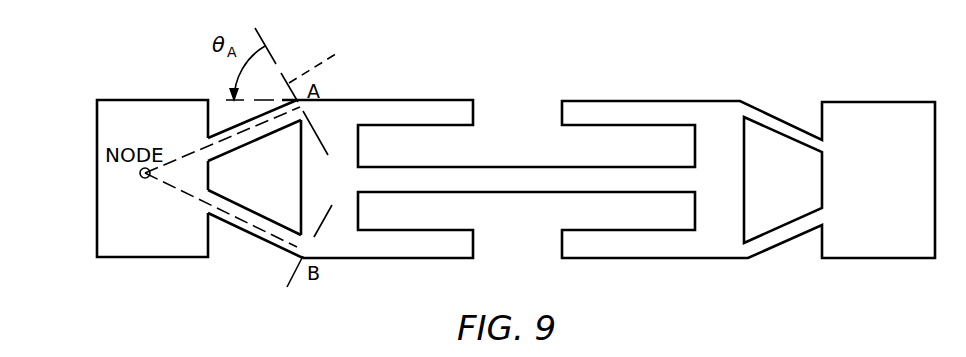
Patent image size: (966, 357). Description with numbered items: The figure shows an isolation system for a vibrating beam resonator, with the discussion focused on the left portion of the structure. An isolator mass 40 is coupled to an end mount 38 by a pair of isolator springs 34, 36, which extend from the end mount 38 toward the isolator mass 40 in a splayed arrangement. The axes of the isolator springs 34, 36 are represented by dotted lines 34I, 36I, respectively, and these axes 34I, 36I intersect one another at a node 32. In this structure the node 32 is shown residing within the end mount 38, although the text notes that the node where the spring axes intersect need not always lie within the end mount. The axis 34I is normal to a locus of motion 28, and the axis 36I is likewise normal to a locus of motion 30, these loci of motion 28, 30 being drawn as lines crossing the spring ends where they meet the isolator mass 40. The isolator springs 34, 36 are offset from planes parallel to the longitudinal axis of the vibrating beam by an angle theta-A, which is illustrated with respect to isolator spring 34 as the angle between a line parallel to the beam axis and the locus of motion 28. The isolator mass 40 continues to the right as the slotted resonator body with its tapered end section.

The locus of motion 28 is at (327, 62).
The locus of motion 30 is at (294, 283).
The node 32 is at (141, 178).
The isolator spring 34 is at (268, 112).
The axis of isolator spring 34I is at (185, 155).
The isolator spring 36 is at (247, 232).
The axis of isolator spring 36I is at (192, 198).
The end mount 38 is at (152, 100).
The isolator mass 40 is at (427, 100).